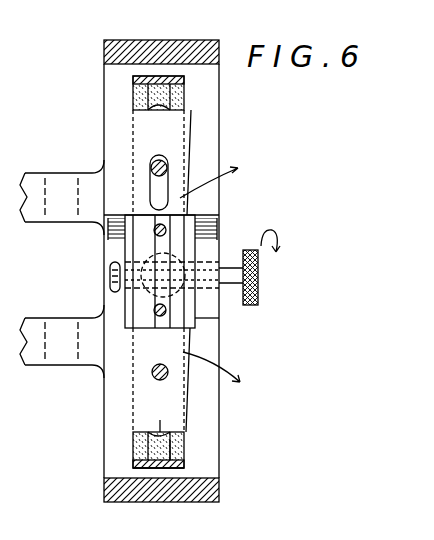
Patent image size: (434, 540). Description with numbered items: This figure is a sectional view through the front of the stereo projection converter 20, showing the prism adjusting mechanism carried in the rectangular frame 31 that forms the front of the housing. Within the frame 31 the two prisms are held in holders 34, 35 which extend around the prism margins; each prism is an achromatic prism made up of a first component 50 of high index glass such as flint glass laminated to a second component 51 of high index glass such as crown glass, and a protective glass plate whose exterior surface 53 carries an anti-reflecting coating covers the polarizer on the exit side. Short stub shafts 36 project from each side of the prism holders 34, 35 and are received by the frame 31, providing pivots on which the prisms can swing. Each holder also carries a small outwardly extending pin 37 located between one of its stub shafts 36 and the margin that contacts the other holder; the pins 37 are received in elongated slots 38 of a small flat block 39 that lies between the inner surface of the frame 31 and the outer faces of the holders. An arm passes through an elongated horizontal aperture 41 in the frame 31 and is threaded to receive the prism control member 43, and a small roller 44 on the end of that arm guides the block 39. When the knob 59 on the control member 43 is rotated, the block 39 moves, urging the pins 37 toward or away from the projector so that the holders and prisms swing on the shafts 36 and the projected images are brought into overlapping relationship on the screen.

The stereo projection converter 20 is at (75, 164).
The rectangular frame 31 is at (192, 44).
The prism holder 34 is at (133, 80).
The prism holder 35 is at (140, 468).
The stub shaft 36 is at (166, 168).
The pin 37 is at (156, 226).
The elongated slot 38 is at (125, 246).
The flat block 39 is at (200, 319).
The elongated horizontal aperture 41 is at (200, 252).
The prism control member 43 is at (249, 248).
The roller 44 is at (115, 296).
The first component of achromatic prism 50 is at (135, 452).
The second component of achromatic prism 51 is at (161, 420).
The exterior surface 53 is at (184, 448).
The knob 59 is at (258, 290).